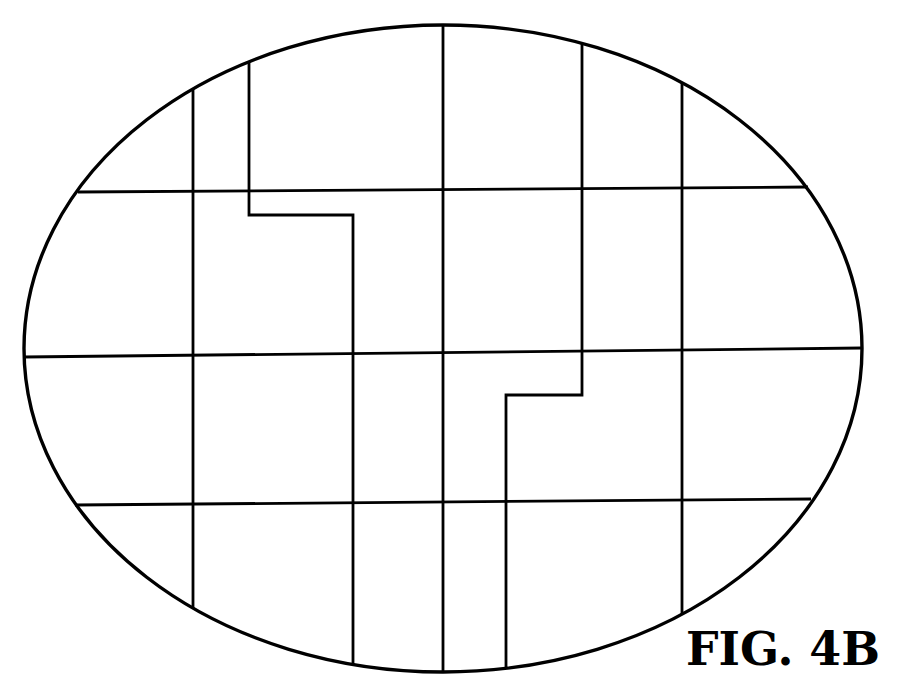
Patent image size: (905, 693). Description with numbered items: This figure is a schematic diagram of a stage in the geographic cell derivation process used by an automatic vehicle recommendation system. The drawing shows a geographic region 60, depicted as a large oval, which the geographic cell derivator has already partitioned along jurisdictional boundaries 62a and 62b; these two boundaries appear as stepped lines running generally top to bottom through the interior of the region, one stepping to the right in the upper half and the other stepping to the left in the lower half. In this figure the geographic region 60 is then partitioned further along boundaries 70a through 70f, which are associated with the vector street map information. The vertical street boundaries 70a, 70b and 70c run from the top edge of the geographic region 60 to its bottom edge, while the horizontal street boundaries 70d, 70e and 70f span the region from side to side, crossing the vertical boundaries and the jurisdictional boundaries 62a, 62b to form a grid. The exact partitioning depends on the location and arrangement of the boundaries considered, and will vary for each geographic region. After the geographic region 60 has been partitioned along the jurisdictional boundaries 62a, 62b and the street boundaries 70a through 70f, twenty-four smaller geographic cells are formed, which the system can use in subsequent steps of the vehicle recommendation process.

The geographic region 60 is at (756, 105).
The jurisdictional boundary 62a is at (336, 363).
The jurisdictional boundary 62b is at (534, 355).
The boundary associated with vector street map information 70a is at (244, 348).
The boundary associated with vector street map information 70b is at (453, 348).
The boundary associated with vector street map information 70c is at (645, 348).
The boundary associated with vector street map information 70d is at (443, 475).
The boundary associated with vector street map information 70e is at (443, 331).
The boundary associated with vector street map information 70f is at (443, 221).